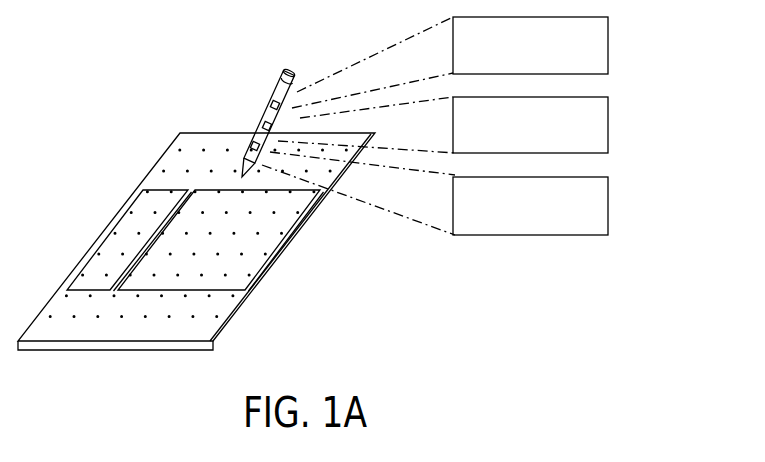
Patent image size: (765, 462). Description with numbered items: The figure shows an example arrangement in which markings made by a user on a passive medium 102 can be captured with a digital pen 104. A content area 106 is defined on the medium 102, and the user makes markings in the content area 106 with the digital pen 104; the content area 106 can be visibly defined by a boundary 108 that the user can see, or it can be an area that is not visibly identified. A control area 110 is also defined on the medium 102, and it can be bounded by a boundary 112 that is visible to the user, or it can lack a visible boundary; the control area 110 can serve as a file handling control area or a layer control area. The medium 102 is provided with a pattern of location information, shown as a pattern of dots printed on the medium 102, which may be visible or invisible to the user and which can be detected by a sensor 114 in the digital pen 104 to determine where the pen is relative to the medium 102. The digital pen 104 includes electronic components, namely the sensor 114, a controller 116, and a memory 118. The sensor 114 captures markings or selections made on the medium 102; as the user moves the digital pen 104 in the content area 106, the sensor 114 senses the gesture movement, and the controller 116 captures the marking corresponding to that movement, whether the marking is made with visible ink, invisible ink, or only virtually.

The passive medium 102 is at (117, 349).
The digital pen 104 is at (270, 91).
The content area 106 is at (252, 248).
The boundary 108 is at (292, 190).
The control area 110 is at (123, 248).
The boundary 112 is at (168, 190).
The sensor 114 is at (608, 204).
The controller 116 is at (608, 125).
The memory 118 is at (608, 46).